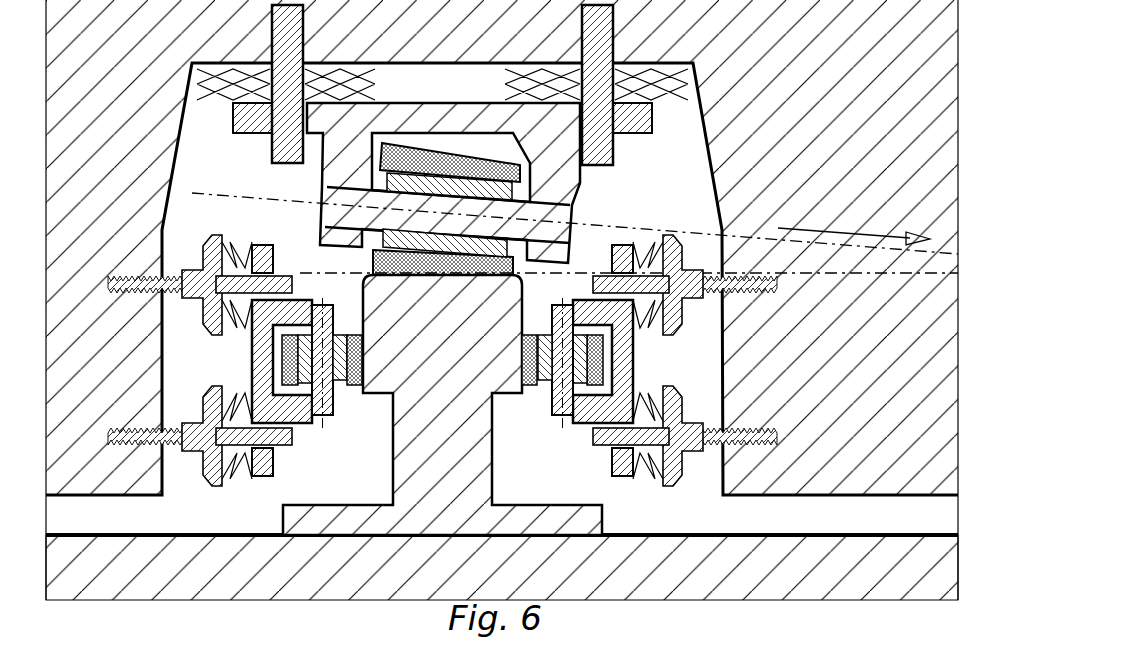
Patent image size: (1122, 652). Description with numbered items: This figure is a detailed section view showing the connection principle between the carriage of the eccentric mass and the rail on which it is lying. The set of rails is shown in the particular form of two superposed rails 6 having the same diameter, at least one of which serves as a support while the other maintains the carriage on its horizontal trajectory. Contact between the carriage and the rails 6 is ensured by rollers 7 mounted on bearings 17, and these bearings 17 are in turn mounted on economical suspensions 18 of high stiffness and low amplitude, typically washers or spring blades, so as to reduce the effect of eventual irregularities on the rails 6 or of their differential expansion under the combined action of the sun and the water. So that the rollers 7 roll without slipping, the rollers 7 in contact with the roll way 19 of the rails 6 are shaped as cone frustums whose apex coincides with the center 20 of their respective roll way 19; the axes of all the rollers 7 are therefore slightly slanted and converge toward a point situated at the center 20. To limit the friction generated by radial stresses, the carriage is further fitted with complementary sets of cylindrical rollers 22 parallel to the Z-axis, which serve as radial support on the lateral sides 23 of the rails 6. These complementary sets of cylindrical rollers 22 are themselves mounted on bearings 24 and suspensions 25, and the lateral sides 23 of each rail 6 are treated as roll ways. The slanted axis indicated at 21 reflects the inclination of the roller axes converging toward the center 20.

The rails 6 is at (455, 455).
The rollers 7 is at (410, 263).
The bearings 17 is at (493, 188).
The suspensions 18 is at (494, 88).
The roll way 19 is at (427, 288).
The center 20 is at (854, 228).
The tilted axis 21 is at (210, 184).
The cylindrical rollers 22 is at (289, 357).
The lateral sides 23 is at (378, 363).
The bearings 24 is at (302, 368).
The suspensions 25 is at (650, 384).